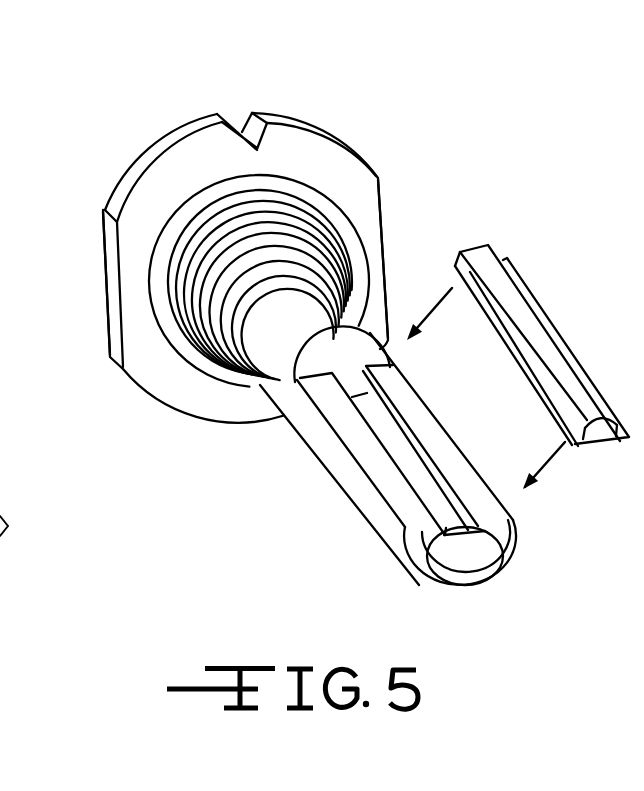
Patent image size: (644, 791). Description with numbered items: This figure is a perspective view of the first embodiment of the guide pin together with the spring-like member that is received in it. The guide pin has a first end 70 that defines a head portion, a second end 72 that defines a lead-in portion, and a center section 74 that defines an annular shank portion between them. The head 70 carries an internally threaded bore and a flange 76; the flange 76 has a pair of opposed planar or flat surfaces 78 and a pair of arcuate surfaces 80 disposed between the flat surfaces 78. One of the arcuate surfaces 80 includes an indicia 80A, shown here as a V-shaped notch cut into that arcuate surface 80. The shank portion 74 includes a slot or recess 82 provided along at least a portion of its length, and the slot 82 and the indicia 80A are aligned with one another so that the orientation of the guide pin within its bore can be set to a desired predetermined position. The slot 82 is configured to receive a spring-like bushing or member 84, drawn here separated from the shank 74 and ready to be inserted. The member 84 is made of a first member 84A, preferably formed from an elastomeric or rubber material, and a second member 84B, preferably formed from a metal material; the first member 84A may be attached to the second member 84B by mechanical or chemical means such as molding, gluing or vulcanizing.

The first end 70 is at (318, 116).
The second end 72 is at (478, 597).
The center section 74 is at (340, 492).
The flange 76 is at (350, 173).
The flat surfaces 78 is at (385, 226).
The arcuate surfaces 80 is at (153, 152).
The indicia 80A is at (226, 126).
The slot 82 is at (404, 447).
The member 84 is at (536, 286).
The first member 84A is at (560, 367).
The second member 84B is at (607, 447).